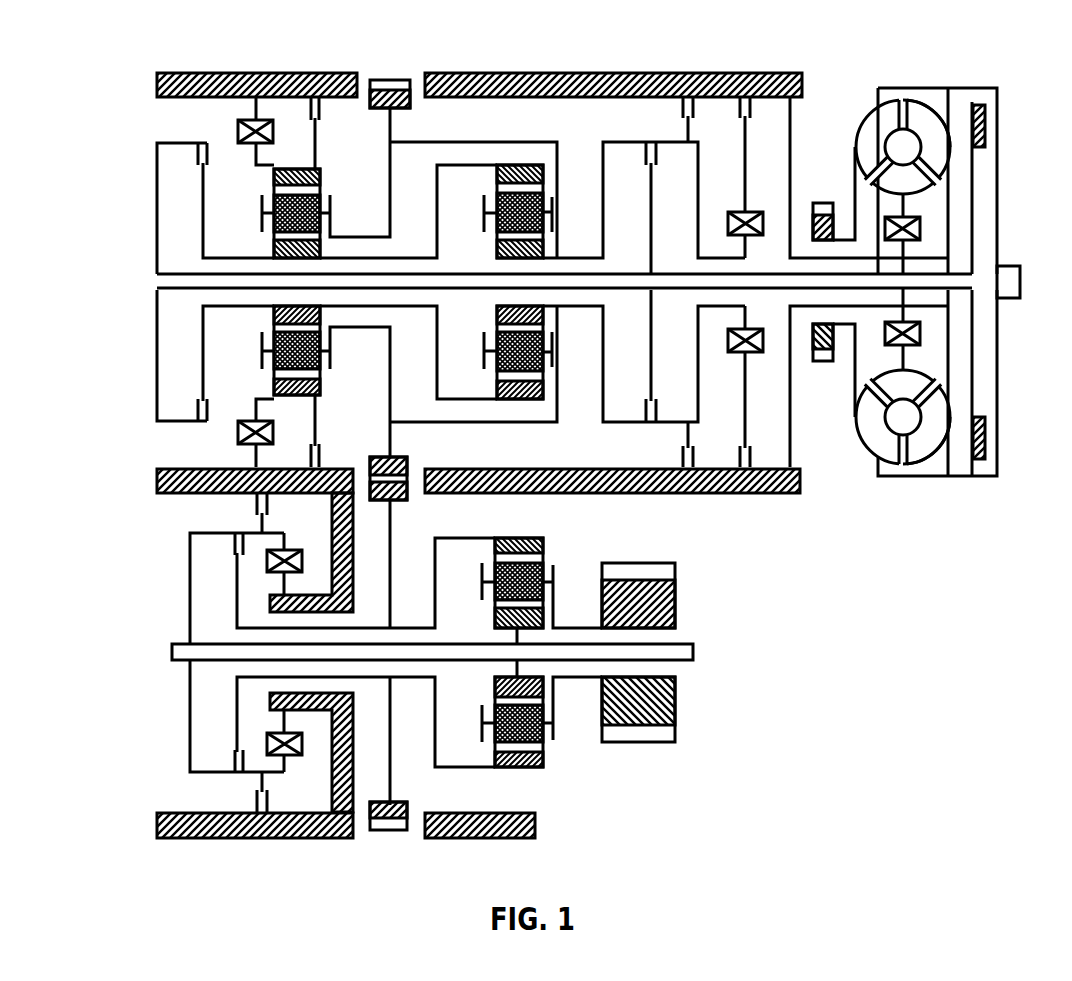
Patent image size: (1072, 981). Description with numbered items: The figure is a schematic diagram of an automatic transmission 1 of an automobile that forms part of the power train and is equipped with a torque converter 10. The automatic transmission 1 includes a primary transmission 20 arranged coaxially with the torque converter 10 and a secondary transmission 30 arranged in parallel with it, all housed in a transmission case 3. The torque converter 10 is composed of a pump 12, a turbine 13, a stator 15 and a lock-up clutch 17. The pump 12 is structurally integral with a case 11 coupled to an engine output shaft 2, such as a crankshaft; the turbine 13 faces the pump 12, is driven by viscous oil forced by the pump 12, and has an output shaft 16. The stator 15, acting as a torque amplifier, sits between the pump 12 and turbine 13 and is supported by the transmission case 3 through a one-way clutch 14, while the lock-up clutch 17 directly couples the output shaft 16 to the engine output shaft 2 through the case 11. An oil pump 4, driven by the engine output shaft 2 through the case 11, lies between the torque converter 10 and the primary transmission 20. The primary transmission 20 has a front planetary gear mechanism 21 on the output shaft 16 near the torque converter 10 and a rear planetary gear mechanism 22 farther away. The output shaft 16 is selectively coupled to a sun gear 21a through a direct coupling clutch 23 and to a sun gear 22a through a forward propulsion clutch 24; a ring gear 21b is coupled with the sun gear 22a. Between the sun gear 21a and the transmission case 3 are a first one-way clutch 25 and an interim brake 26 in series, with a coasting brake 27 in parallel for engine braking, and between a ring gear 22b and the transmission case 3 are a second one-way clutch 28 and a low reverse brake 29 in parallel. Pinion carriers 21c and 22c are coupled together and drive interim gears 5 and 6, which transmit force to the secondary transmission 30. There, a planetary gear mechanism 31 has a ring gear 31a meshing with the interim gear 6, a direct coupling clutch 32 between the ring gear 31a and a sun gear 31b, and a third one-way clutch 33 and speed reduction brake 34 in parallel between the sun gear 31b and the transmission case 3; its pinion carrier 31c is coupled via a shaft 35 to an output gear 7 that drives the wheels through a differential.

The automatic transmission 1 is at (1030, 66).
The engine output shaft 2 is at (1012, 264).
The transmission case 3 is at (637, 80).
The oil pump 4 is at (822, 360).
The interim gear 5 is at (408, 465).
The interim gear 6 is at (408, 497).
The output gear 7 is at (678, 566).
The torque converter 10 is at (902, 250).
The case 11 is at (920, 88).
The pump 12 is at (858, 146).
The turbine 13 is at (938, 118).
The one-way clutch 14 is at (906, 240).
The stator 15 is at (911, 184).
The output shaft 16 is at (900, 289).
The lock-up clutch 17 is at (986, 127).
The primary transmission 20 is at (132, 112).
The front planetary gear mechanism 21 is at (520, 245).
The sun gear 21a is at (497, 253).
The ring gear 21b is at (497, 172).
The pinion carrier 21c is at (553, 212).
The rear planetary gear mechanism 22 is at (301, 278).
The sun gear 22a is at (274, 252).
The ring gear 22b is at (274, 176).
The pinion carrier 22c is at (332, 206).
The direct coupling clutch 23 is at (657, 160).
The forward propulsion clutch 24 is at (202, 160).
The first one-way clutch 25 is at (748, 210).
The interim brake 26 is at (752, 106).
The coasting brake 27 is at (682, 112).
The second one-way clutch 28 is at (238, 130).
The low reverse brake 29 is at (322, 112).
The secondary transmission 30 is at (140, 545).
The planetary gear mechanism 31 is at (529, 629).
The ring gear 31a is at (515, 540).
The sun gear 31b is at (497, 620).
The pinion carrier 31c is at (556, 565).
The direct coupling clutch 32 is at (235, 548).
The third one-way clutch 33 is at (286, 548).
The speed reduction brake 34 is at (255, 508).
The shaft 35 is at (172, 646).